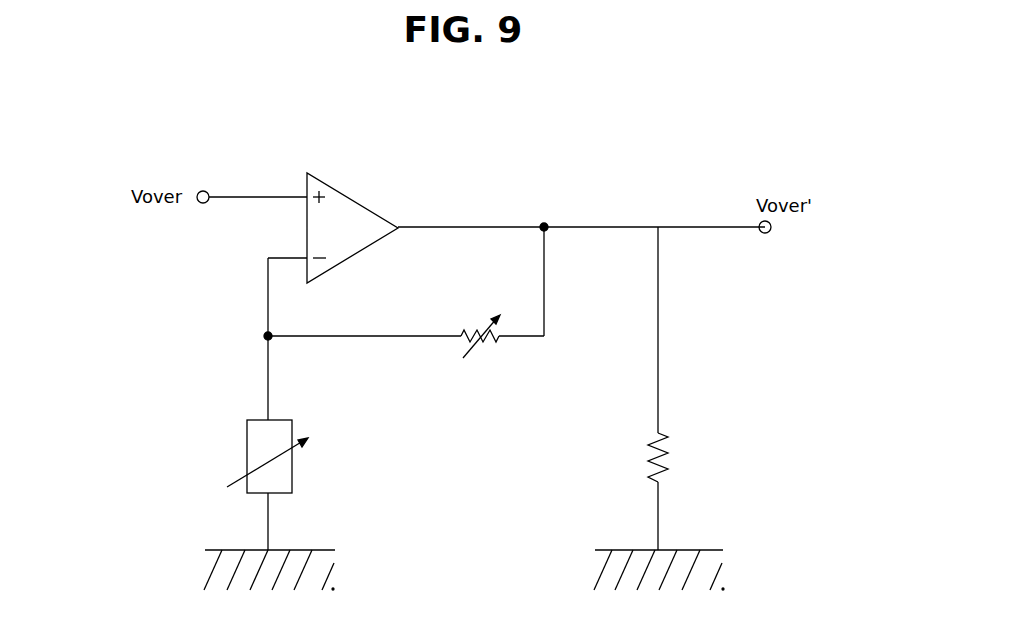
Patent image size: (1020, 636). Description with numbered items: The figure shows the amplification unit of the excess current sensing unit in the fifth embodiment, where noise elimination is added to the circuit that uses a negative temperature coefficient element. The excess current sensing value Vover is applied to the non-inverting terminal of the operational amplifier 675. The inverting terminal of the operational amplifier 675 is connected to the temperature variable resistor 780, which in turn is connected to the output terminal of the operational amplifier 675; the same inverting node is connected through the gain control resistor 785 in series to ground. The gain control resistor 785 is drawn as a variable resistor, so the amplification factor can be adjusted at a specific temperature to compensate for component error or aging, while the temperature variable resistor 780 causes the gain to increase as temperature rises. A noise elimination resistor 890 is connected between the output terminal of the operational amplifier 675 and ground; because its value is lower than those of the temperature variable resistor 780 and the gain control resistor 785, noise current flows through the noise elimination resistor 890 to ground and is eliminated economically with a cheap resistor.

The operational amplifier 675 is at (343, 190).
The gain control resistor 785 is at (468, 326).
The NTC element 780 is at (247, 440).
The noise elimination resistor 890 is at (663, 438).